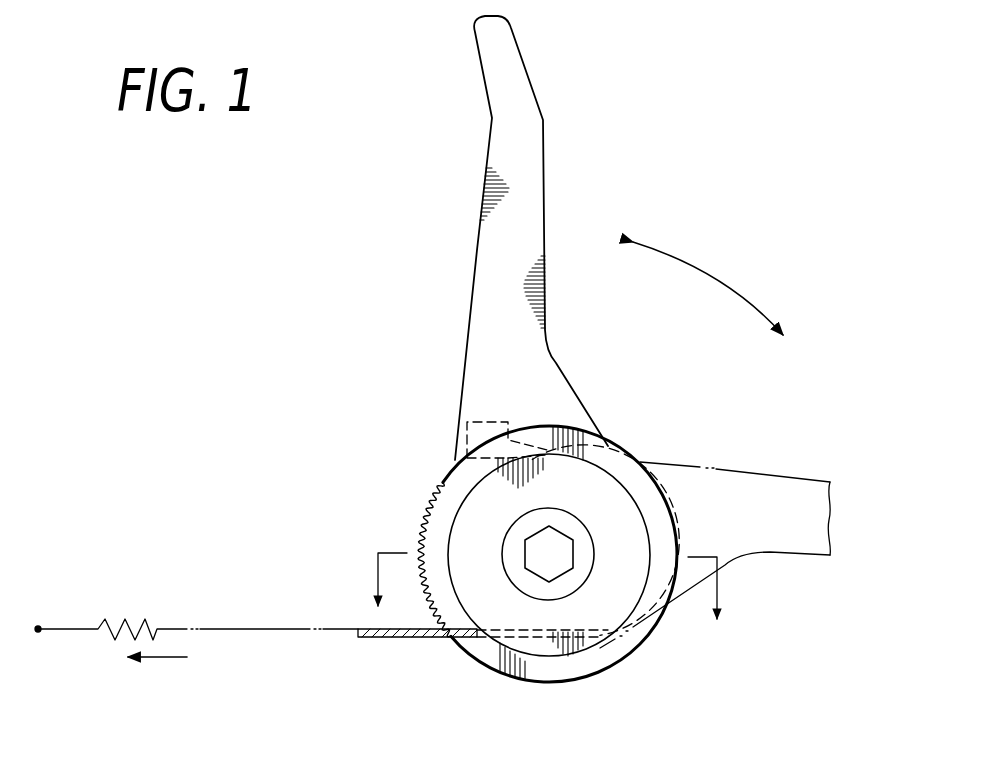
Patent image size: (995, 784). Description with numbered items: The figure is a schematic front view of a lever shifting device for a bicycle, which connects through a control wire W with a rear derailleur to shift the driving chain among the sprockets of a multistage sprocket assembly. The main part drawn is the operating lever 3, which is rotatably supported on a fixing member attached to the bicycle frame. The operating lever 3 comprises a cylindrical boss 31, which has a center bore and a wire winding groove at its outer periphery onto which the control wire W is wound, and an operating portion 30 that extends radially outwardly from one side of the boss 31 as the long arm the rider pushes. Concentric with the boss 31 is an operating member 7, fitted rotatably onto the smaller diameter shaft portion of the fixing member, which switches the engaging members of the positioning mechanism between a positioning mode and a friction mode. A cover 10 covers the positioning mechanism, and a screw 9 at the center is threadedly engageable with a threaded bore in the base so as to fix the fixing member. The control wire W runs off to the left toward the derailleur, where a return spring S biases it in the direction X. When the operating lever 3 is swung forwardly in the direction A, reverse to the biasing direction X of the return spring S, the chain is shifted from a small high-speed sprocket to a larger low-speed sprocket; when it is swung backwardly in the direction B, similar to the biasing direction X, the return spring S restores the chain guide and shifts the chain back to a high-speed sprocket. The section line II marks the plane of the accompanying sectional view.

The operating lever 3 is at (543, 118).
The operating portion 30 is at (487, 252).
The cylindrical boss 31 is at (585, 460).
The operating member 7 is at (588, 662).
The cover 10 is at (485, 600).
The screw 9 is at (538, 590).
The control wire W is at (390, 638).
The return spring S is at (117, 620).
The forward operating direction A is at (708, 266).
The backward operating direction B is at (808, 327).
The biasing direction X is at (138, 678).
The section line II- II is at (541, 603).